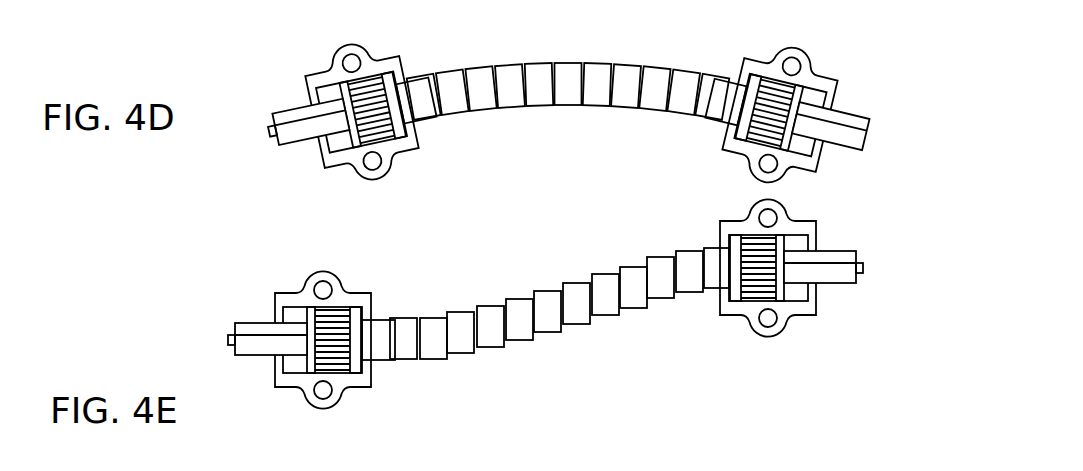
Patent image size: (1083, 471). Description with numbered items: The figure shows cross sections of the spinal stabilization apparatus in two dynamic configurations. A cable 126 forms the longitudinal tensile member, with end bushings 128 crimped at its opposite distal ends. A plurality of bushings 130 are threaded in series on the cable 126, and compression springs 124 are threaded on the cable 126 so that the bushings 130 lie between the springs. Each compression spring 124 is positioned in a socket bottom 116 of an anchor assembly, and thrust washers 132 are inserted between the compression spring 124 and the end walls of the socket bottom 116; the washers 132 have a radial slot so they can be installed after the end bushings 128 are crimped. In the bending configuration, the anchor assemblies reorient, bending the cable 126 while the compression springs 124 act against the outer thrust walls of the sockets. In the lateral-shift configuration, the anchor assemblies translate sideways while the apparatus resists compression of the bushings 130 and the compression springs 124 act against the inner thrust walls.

In FIG. 4D, the socket bottom 116 is at (806, 76).
In FIG. 4E, the socket bottom 116 is at (780, 333).
In FIG. 4D, the compression spring 124 is at (363, 78).
In FIG. 4E, the compression spring 124 is at (338, 335).
In FIG. 4D, the cable 126 is at (250, 136).
In FIG. 4E, the cable 126 is at (232, 337).
In FIG. 4D, the end bushing 128 is at (278, 118).
In FIG. 4E, the end bushing 128 is at (838, 252).
In FIG. 4D, the bushing 130 is at (543, 72).
In FIG. 4E, the bushing 130 is at (635, 297).
In FIG. 4D, the thrust washer 132 is at (728, 97).